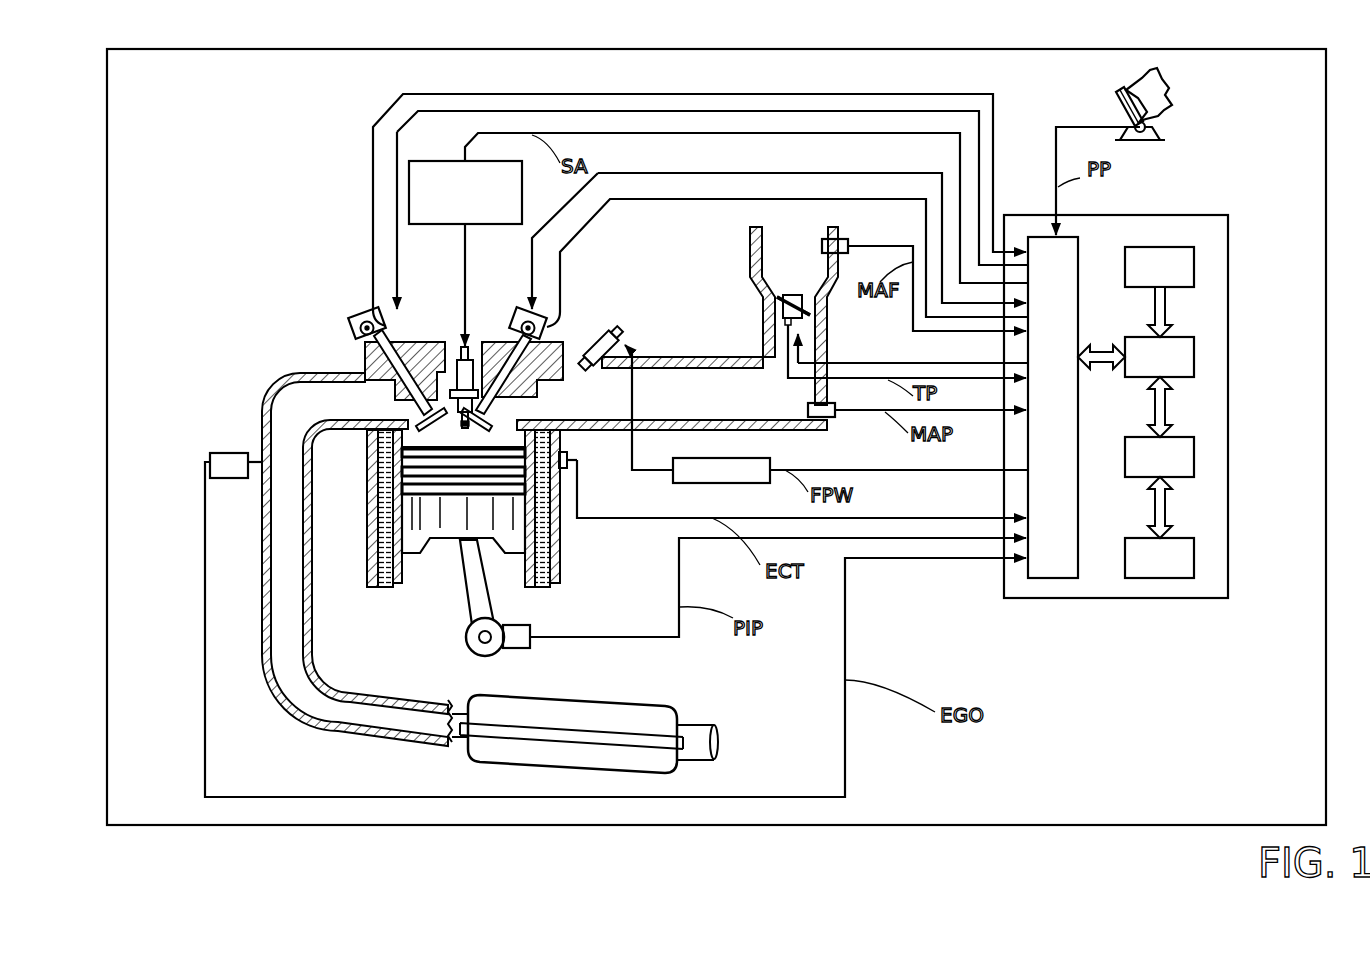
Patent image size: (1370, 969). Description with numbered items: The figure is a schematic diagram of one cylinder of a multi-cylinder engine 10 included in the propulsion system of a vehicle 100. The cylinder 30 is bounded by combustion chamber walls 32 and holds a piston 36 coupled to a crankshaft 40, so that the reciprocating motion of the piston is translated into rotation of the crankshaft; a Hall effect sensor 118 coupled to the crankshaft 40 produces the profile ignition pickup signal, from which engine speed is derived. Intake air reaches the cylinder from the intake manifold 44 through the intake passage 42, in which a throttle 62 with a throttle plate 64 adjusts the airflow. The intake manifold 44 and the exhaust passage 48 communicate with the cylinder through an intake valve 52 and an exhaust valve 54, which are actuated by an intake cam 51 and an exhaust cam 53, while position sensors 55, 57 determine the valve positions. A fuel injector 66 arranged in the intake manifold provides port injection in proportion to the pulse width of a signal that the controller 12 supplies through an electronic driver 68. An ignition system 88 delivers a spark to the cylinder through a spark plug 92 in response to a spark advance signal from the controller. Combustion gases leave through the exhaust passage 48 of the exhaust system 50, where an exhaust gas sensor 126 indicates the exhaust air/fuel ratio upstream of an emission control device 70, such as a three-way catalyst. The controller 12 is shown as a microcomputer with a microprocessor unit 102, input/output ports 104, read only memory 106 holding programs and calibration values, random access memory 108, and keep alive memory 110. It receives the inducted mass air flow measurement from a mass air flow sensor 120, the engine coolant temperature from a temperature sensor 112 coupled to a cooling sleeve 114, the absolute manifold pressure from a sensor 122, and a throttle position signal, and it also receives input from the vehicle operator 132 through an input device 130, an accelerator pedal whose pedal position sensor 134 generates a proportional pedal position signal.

The vehicle 100 is at (107, 66).
The engine 10 is at (302, 291).
The exhaust system 50 is at (247, 392).
The exhaust passage 48 is at (340, 411).
The exhaust gas sensor 126 is at (210, 455).
The cylinder 30 is at (462, 445).
The combustion chamber walls 32 is at (406, 570).
The piston 36 is at (466, 534).
The crankshaft 40 is at (473, 652).
The Hall effect sensor 118 is at (517, 650).
The emission control device 70 is at (638, 703).
The position sensor 57 is at (383, 323).
The exhaust cam 53 is at (410, 316).
The exhaust valve 54 is at (416, 414).
The spark plug 92 is at (471, 348).
The intake cam 51 is at (520, 312).
The position sensor 55 is at (541, 336).
The intake valve 52 is at (503, 414).
The fuel injector 66 is at (604, 346).
The temperature sensor 112 is at (578, 462).
The cooling sleeve 114 is at (562, 540).
The ignition system 88 is at (418, 161).
The mass air flow sensor 120 is at (840, 238).
The intake passage 42 is at (802, 271).
The throttle plate 64 is at (773, 299).
The throttle 62 is at (812, 303).
The intake manifold 44 is at (742, 406).
The sensor 122 is at (835, 417).
The electronic driver 68 is at (697, 488).
The input device 130 is at (1122, 103).
The vehicle operator 132 is at (1168, 90).
The pedal position sensor 134 is at (1150, 128).
The controller 12 is at (1222, 214).
The input/output ports 104 is at (1079, 246).
The read only memory 106 is at (1195, 265).
The microprocessor unit 102 is at (1195, 353).
The random access memory 108 is at (1195, 453).
The keep alive memory 110 is at (1195, 553).